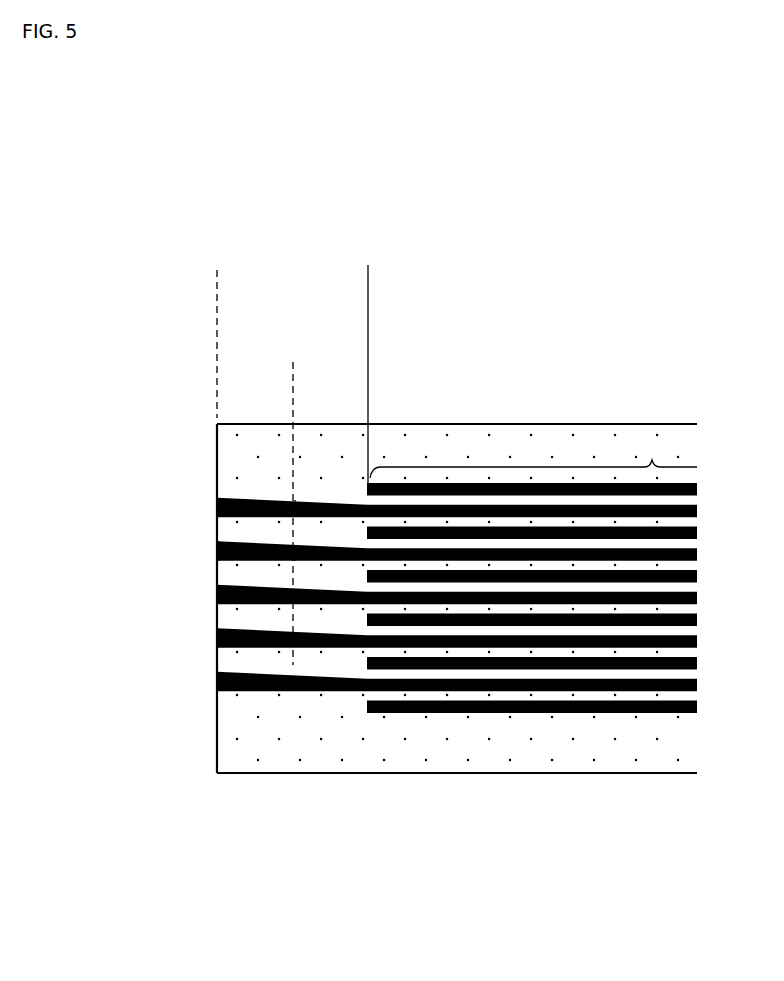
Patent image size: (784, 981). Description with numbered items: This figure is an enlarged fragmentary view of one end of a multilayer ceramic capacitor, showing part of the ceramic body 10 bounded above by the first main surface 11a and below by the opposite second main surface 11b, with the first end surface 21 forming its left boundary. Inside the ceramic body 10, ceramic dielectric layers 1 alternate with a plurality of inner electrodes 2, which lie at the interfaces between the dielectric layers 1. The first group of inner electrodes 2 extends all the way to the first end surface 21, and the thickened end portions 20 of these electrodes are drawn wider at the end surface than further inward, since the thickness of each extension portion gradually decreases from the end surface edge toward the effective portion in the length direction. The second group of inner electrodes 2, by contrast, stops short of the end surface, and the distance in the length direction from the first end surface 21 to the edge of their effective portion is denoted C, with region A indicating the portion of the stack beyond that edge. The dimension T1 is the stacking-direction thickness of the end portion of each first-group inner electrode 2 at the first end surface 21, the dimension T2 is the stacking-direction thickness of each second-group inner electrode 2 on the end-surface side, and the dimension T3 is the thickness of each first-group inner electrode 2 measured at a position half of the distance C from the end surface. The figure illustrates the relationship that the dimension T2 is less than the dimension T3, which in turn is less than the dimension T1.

The ceramic dielectric layer 1 is at (641, 650).
The inner electrode 2 is at (442, 603).
The ceramic body 10 is at (569, 423).
The first main surface 11a is at (471, 424).
The second main surface 11b is at (603, 773).
The thick end portion of internal electrode 20 is at (240, 498).
The first end surface 21 is at (216, 613).
The end-portion dimension of inner electrode T1 is at (215, 588).
The dimension of inner electrode 2b T2 is at (366, 487).
The dimension of inner electrode 2a at C/2 T3 is at (297, 541).
The region A is at (652, 460).
The distance from first end surface to effective portion edge C is at (367, 288).